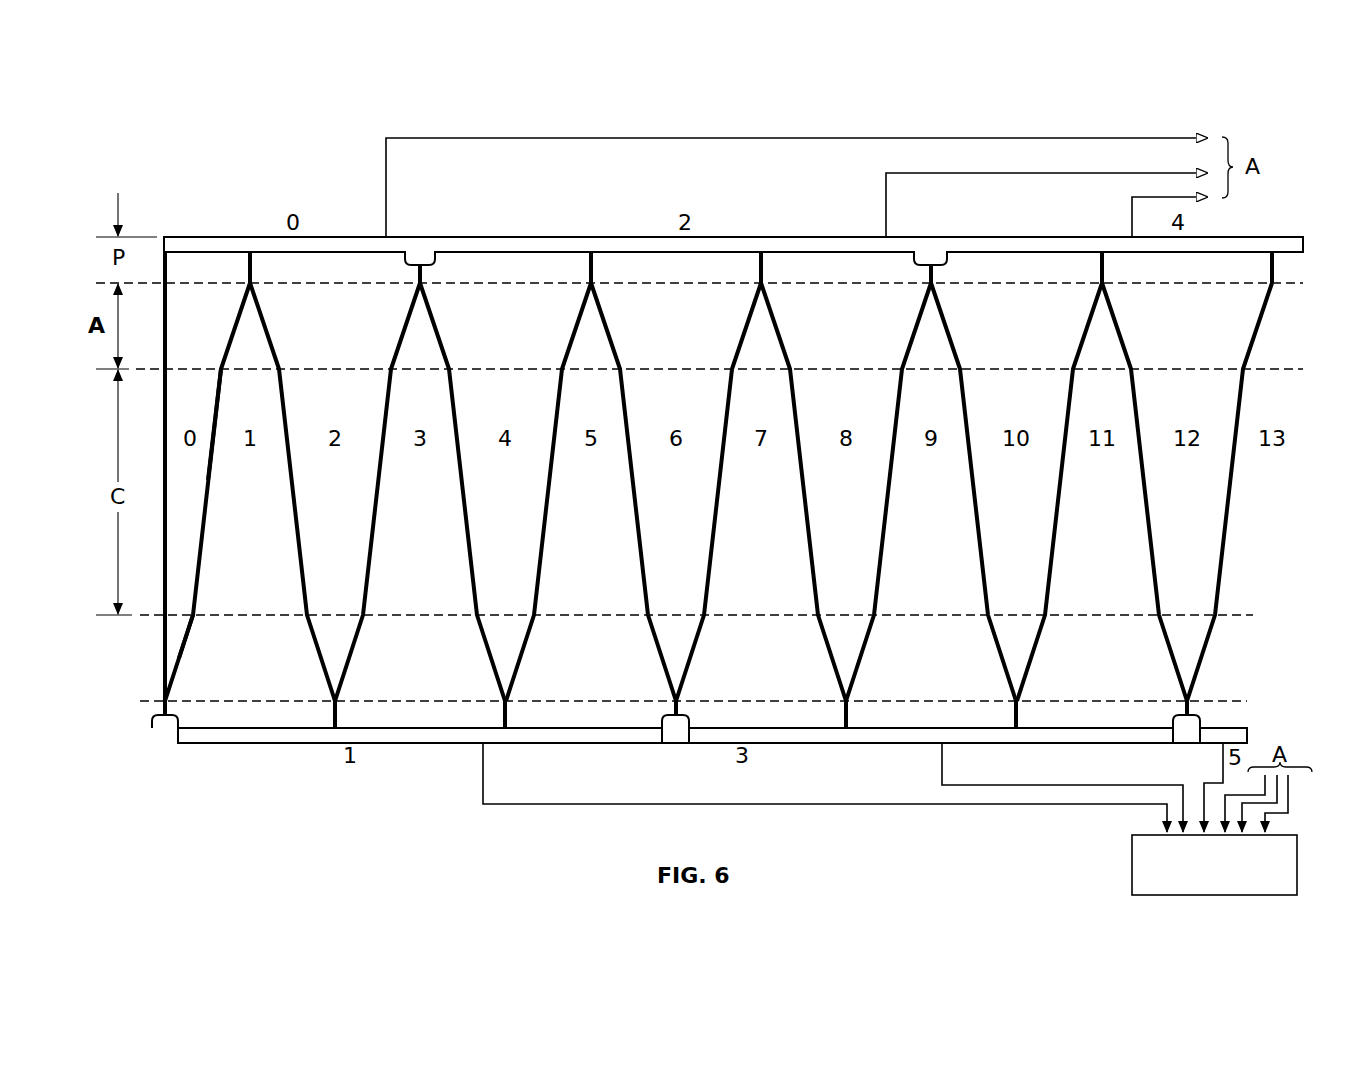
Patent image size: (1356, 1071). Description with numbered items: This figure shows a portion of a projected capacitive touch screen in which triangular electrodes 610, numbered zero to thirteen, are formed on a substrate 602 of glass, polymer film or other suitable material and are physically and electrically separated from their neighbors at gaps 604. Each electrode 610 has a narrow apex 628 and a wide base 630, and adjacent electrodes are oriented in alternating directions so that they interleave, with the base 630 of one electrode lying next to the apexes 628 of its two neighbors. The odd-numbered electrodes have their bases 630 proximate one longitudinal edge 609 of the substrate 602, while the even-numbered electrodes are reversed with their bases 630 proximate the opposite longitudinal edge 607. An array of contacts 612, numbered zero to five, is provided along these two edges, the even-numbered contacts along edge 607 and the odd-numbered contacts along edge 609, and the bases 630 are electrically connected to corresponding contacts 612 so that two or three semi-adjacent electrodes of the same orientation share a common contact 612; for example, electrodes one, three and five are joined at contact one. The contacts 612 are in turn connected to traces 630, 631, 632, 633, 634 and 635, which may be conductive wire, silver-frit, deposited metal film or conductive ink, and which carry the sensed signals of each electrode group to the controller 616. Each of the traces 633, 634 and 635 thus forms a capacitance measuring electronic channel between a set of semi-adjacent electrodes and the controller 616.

The substrate 602 is at (164, 538).
The gaps 604 is at (213, 405).
The longitudinal edge 607 is at (1294, 257).
The longitudinal edge 609 is at (1230, 719).
The electrodes 610 is at (172, 648).
The contacts 612 is at (163, 154).
The controller 616 is at (1132, 860).
The apex 628 is at (251, 337).
The base 630 is at (341, 119).
The trace 631 is at (866, 201).
The trace 632 is at (1116, 209).
The trace 633 is at (483, 773).
The trace 634 is at (942, 757).
The trace 635 is at (1223, 750).